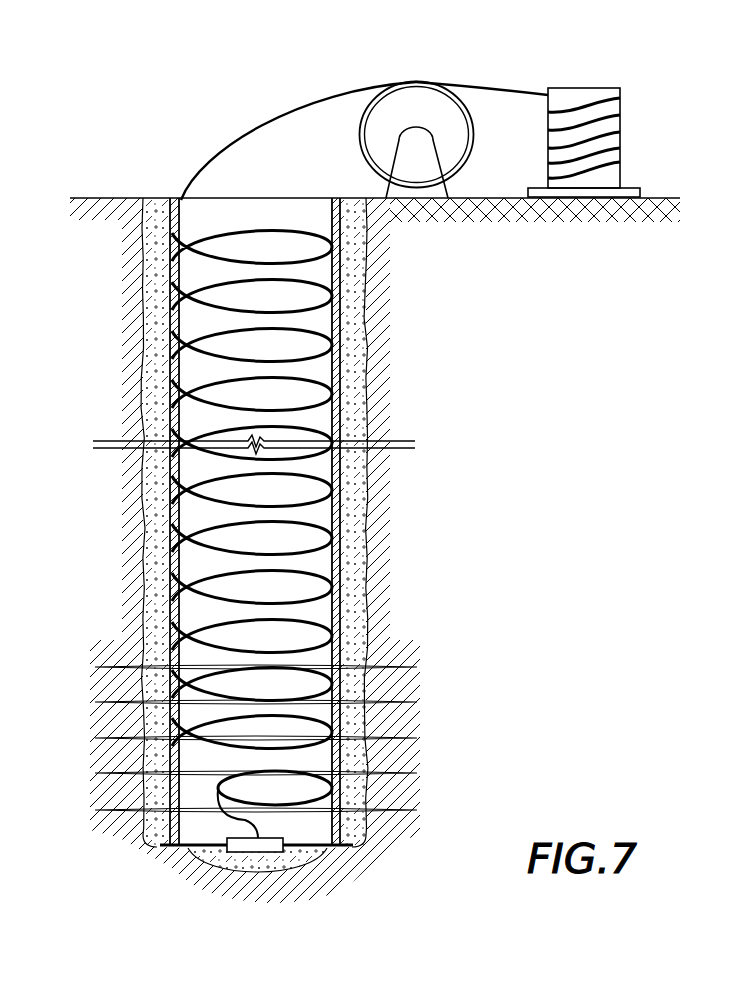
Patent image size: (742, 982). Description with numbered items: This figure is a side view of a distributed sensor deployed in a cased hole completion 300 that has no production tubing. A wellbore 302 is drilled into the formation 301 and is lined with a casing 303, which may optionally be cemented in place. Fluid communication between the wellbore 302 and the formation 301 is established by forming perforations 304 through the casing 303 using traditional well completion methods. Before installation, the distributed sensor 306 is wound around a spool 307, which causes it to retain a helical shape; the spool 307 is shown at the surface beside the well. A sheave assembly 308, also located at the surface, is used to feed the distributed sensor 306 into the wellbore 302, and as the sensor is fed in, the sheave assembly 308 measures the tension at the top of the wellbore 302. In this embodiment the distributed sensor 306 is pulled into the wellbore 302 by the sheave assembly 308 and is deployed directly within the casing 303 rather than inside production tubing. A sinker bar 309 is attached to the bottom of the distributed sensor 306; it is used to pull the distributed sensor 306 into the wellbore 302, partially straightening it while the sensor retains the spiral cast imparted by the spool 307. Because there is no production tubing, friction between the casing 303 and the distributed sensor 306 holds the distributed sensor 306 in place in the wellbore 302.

The cased hole completion 300 is at (178, 140).
The formation 301 is at (463, 615).
The wellbore 302 is at (416, 493).
The casing 303 is at (347, 325).
The perforations 304 is at (405, 736).
The distributed sensor 306 is at (290, 117).
The spool 307 is at (585, 95).
The sheave assembly 308 is at (405, 110).
The sinker bar 309 is at (283, 842).